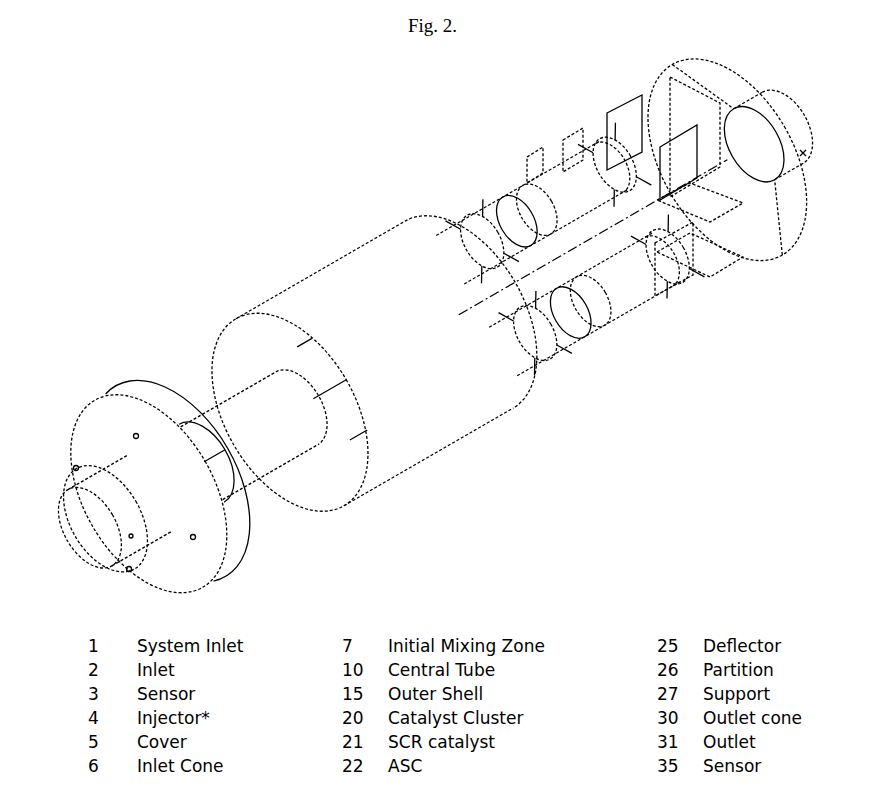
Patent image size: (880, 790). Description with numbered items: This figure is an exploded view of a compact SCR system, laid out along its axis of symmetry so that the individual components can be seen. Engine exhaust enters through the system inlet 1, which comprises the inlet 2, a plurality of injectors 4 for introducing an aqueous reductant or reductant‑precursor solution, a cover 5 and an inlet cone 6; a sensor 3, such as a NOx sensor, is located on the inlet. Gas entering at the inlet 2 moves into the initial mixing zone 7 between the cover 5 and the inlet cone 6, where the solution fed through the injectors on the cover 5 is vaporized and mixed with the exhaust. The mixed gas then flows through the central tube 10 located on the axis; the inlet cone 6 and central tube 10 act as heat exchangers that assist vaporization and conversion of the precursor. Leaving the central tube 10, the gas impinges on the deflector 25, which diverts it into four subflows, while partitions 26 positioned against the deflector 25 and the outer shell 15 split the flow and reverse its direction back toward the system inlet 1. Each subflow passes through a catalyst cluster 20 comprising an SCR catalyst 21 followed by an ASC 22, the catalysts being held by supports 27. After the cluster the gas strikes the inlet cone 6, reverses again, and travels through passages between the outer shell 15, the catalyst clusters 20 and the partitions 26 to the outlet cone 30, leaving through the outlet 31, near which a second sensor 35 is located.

The system inlet 1 is at (158, 474).
The inlet 2 is at (107, 517).
The sensor 3 is at (134, 538).
The injector 4 is at (132, 436).
The cover 5 is at (149, 494).
The inlet cone 6 is at (253, 521).
The initial mixing zone 7 is at (213, 472).
The central tube 10 is at (260, 429).
The outer shell 15 is at (374, 364).
The catalyst cluster 20 is at (581, 263).
The SCR catalyst 21 is at (632, 297).
The ASC 22 is at (598, 318).
The deflector 25 is at (727, 199).
The partition 26 is at (635, 195).
The support 27 is at (676, 300).
The outlet cone 30 is at (727, 159).
The outlet 31 is at (789, 106).
The sensor 35 is at (808, 155).